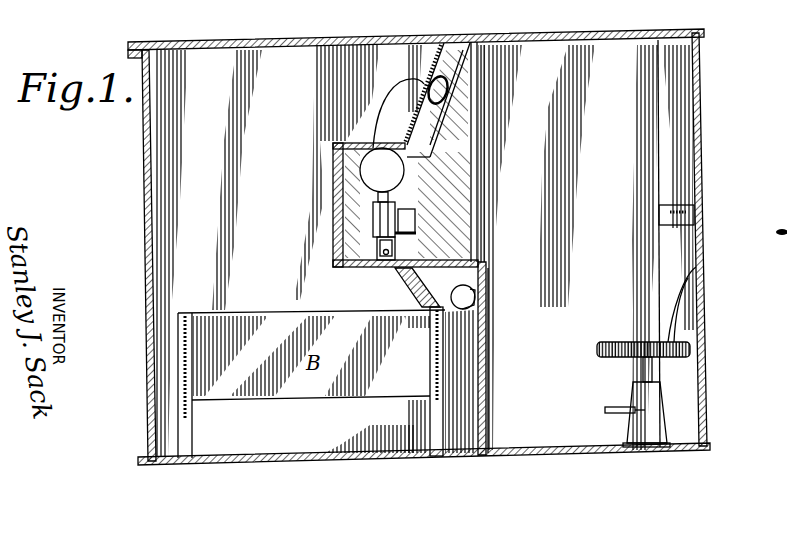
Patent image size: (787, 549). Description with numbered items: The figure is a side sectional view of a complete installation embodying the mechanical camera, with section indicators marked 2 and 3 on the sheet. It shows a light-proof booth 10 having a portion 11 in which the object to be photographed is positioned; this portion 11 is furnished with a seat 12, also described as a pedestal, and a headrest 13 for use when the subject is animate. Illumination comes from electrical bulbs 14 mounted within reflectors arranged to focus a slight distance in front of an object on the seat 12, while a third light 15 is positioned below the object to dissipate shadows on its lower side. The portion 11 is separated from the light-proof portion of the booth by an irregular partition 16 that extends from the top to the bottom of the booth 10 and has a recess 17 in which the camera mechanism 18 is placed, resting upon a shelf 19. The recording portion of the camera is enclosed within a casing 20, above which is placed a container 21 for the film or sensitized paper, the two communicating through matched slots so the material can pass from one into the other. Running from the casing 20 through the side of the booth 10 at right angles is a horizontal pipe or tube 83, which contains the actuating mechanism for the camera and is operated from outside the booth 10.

The light-proof booth 10 is at (487, 36).
The portion 11 is at (543, 52).
The seat 12 is at (630, 343).
The headrest 13 is at (664, 212).
The electrical bulbs 14 is at (445, 43).
The third light 15 is at (476, 299).
The irregular partition 16 is at (484, 351).
The recess 17 is at (350, 160).
The camera mechanism 18 is at (374, 228).
The shelf 19 is at (364, 268).
The casing 20 is at (388, 210).
The container 21 is at (374, 150).
The horizontal pipe or tube 83 is at (416, 231).
The section line 2 is at (160, 155).
The section line 3 is at (636, 55).